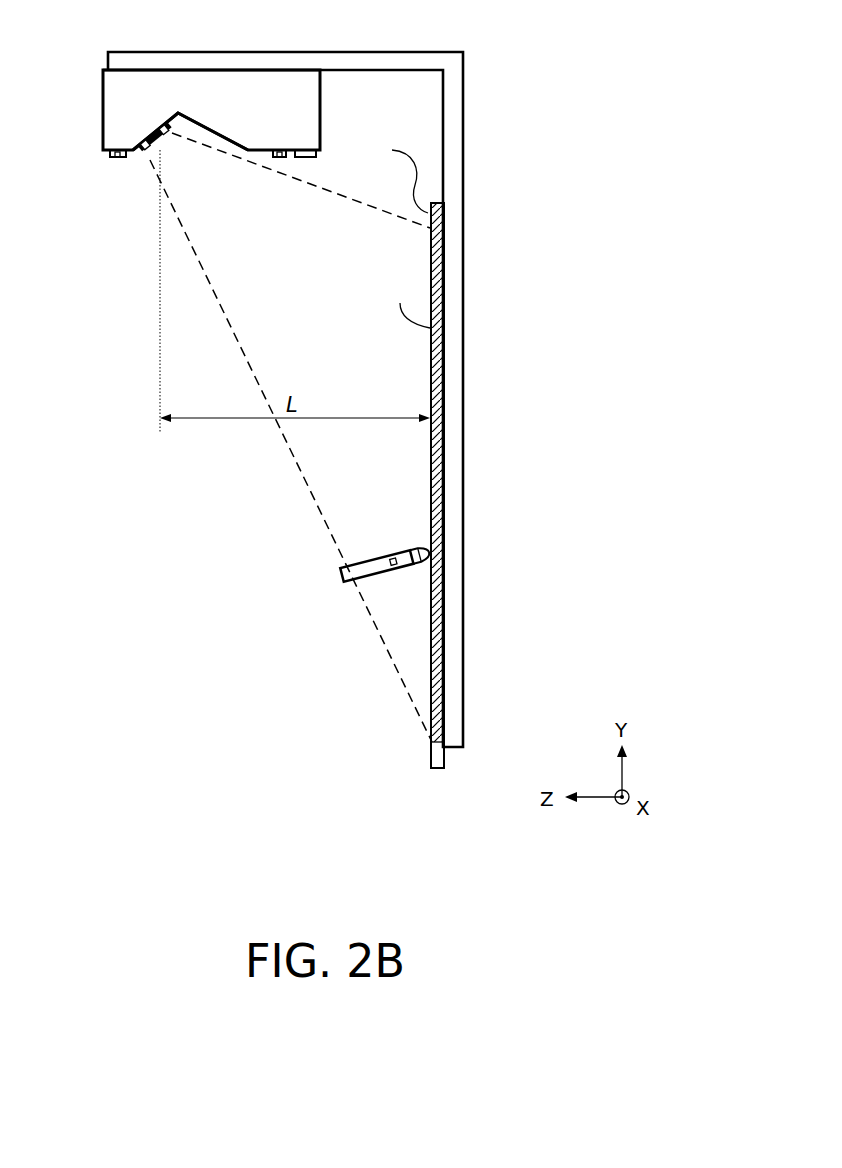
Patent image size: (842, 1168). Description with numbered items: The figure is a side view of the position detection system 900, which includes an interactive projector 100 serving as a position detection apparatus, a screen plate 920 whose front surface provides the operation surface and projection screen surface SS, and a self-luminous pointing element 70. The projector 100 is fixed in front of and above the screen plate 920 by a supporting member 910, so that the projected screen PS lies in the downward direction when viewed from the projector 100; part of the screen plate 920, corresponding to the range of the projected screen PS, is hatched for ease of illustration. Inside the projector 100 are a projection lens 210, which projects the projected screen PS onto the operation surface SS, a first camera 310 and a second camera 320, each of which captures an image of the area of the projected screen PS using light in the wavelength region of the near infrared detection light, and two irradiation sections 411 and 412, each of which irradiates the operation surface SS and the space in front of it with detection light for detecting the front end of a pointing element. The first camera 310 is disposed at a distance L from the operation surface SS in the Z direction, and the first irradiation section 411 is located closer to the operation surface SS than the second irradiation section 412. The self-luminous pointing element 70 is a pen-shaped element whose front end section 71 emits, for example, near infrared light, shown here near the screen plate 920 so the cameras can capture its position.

The interactive projector 100 is at (257, 83).
The projection lens 210 is at (140, 152).
The first camera 310 is at (150, 133).
The second camera 320 is at (315, 155).
The first irradiation section 411 is at (280, 157).
The second irradiation section 412 is at (112, 154).
The self-luminous pointing element 70 is at (340, 577).
The front end section 71 is at (428, 546).
The position detection system 900 is at (503, 86).
The supporting member 910 is at (455, 197).
The screen plate 920 is at (436, 218).